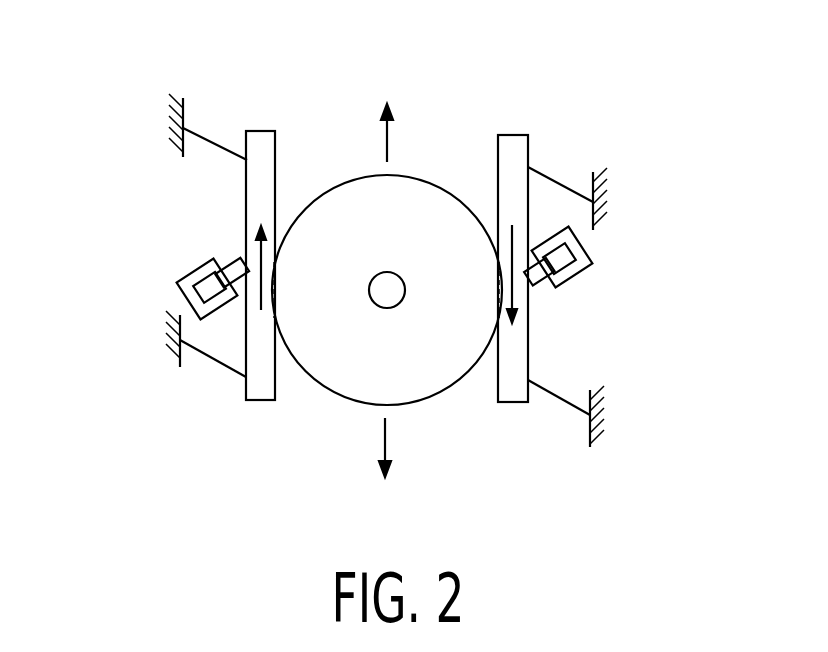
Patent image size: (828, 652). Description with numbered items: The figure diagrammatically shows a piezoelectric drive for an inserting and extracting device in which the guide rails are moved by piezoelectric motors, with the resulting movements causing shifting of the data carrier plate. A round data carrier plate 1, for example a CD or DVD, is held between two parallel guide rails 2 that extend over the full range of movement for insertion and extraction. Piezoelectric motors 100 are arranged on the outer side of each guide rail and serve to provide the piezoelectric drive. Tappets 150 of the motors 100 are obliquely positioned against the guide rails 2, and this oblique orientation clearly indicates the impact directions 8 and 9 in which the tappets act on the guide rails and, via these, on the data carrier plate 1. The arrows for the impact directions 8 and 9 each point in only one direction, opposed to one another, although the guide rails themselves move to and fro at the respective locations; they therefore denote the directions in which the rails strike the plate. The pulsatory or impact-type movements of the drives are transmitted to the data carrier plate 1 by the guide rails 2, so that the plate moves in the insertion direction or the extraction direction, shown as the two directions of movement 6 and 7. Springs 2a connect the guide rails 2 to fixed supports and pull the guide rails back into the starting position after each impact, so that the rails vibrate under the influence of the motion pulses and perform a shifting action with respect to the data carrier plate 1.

The data carrier plate 1 is at (341, 197).
The guide rail 2 is at (260, 185).
The spring 2a is at (203, 137).
The direction of movement 6 is at (389, 148).
The direction of movement 7 is at (387, 432).
The impact direction 8 is at (275, 280).
The impact direction 9 is at (504, 280).
The piezoelectric motor 100 is at (178, 288).
The tappet 150 is at (237, 263).